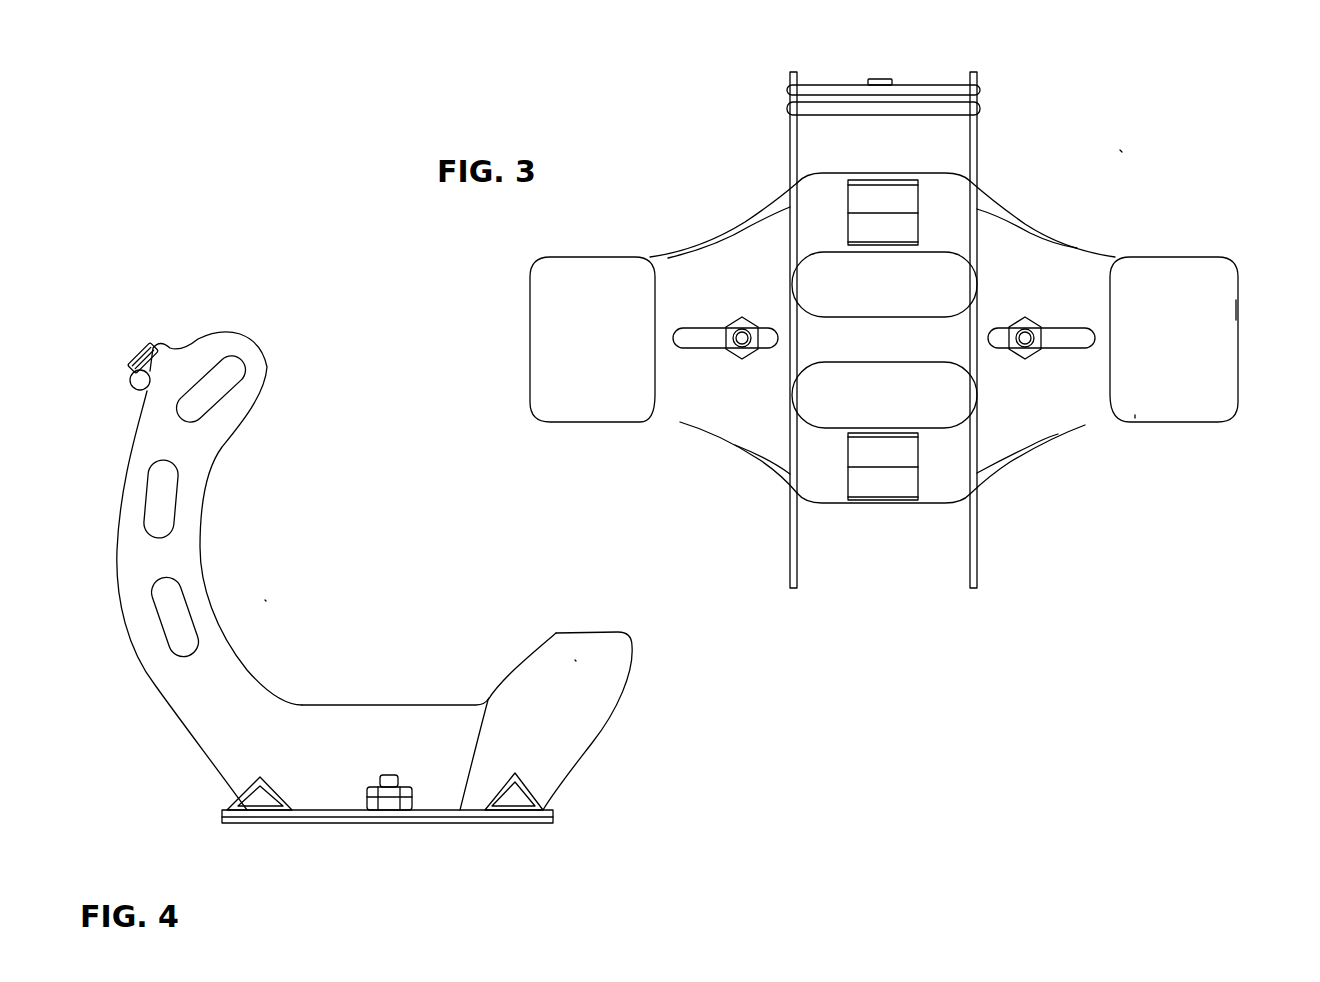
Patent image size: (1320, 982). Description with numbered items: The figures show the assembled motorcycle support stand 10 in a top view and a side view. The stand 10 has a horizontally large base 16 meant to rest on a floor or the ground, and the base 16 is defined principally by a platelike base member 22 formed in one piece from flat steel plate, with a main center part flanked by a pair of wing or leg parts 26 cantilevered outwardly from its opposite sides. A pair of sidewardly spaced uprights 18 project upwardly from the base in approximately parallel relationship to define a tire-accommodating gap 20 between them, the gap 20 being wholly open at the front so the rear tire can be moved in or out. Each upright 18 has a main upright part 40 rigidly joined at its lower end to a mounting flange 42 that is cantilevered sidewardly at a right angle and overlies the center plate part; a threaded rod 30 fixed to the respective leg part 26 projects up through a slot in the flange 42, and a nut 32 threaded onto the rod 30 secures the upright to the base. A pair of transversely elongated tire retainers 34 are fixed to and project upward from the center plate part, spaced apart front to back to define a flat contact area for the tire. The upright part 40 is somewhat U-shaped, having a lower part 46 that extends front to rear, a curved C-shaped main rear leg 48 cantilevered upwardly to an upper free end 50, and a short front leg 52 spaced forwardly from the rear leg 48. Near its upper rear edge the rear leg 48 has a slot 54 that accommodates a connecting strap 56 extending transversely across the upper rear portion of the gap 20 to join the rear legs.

In FIG. 3, the stand 10 is at (1130, 146).
In FIG. 3, the base 16 is at (1132, 444).
In FIG. 3, the uprights 18 is at (785, 547).
In FIG. 4, the uprights 18 is at (265, 594).
In FIG. 3, the tire-accommodating gap 20 is at (848, 543).
In FIG. 3, the base member 22 is at (1241, 282).
In FIG. 4, the base member 22 is at (515, 820).
In FIG. 3, the leg parts 26 is at (548, 306).
In FIG. 4, the rod 30 is at (392, 777).
In FIG. 3, the nut 32 is at (737, 358).
In FIG. 4, the nut 32 is at (372, 803).
In FIG. 3, the tire retainers 34 is at (905, 199).
In FIG. 4, the tire retainers 34 is at (240, 800).
In FIG. 3, the main upright part 40 is at (692, 338).
In FIG. 4, the main upright part 40 is at (177, 696).
In FIG. 3, the mounting flange 42 is at (728, 260).
In FIG. 4, the mounting flange 42 is at (487, 700).
In FIG. 4, the lower part 46 is at (364, 720).
In FIG. 4, the main rear leg 48 is at (180, 558).
In FIG. 4, the upper free end 50 is at (257, 343).
In FIG. 4, the front leg 52 is at (577, 657).
In FIG. 4, the slot 54 is at (132, 383).
In FIG. 3, the connecting strap 56 is at (943, 112).
In FIG. 4, the connecting strap 56 is at (133, 354).